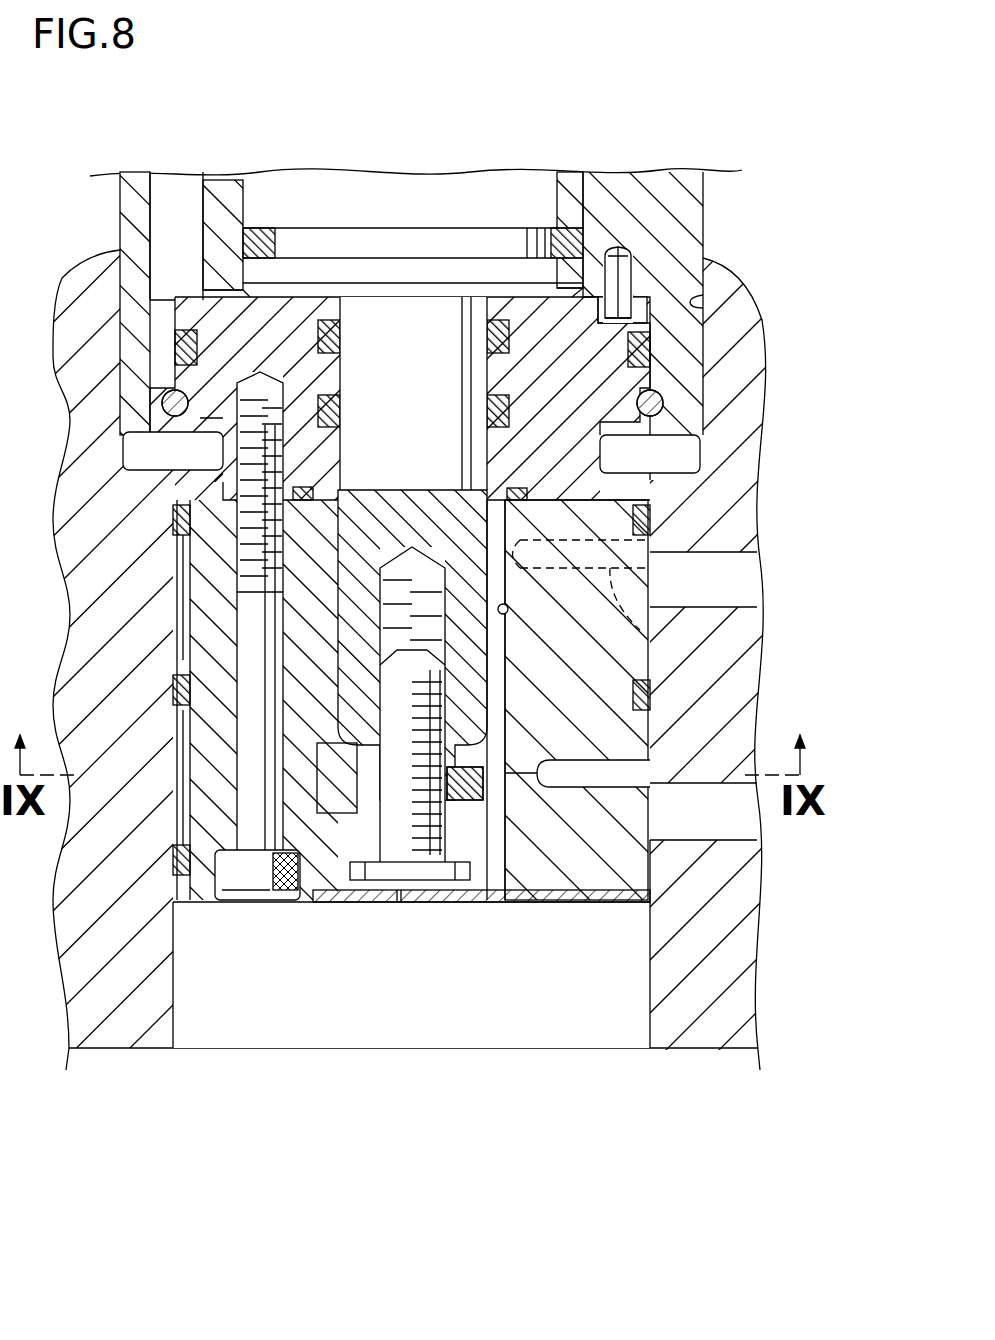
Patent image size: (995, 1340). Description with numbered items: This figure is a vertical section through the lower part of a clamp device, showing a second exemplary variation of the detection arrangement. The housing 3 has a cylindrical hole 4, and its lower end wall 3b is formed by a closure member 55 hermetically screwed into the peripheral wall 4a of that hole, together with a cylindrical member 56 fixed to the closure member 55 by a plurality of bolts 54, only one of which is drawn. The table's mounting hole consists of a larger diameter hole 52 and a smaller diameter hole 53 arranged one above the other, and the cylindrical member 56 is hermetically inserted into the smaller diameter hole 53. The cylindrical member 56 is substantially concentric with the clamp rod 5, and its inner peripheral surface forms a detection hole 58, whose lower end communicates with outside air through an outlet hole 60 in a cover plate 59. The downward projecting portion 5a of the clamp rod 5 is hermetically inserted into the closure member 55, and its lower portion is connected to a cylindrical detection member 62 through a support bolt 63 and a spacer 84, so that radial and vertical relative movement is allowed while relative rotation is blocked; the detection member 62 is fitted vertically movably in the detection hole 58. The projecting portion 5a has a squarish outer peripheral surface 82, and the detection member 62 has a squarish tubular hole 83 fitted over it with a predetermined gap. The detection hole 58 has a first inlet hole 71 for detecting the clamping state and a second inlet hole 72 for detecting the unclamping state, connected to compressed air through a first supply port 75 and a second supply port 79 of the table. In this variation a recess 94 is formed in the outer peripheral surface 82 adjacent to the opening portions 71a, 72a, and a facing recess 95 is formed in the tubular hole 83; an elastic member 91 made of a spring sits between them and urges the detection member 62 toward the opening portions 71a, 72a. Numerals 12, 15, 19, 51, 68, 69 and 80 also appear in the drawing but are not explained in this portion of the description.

The housing 3 is at (715, 212).
The lower end wall 3b is at (822, 360).
The cylindrical hole 4 is at (576, 185).
The peripheral wall 4a is at (690, 262).
The clamp rod 5 is at (497, 670).
The projecting portion 5a is at (490, 673).
The cylinder body 12 is at (492, 392).
The chamber 15 is at (331, 190).
The bore 19 is at (340, 310).
The lower chamber 51 is at (353, 1050).
The larger diameter hole 52 is at (703, 300).
The smaller diameter hole 53 is at (650, 1012).
The bolt 54 is at (243, 900).
The closure member 55 is at (660, 398).
The cylindrical member 56 is at (700, 455).
The detection hole 58 is at (509, 610).
The cover plate 59 is at (322, 897).
The outlet hole 60 is at (385, 940).
The detection member 62 is at (570, 892).
The support bolt 63 is at (440, 882).
The spring retainer 68 is at (472, 800).
The lower sleeve portion 69 is at (522, 845).
The first inlet hole 71 is at (655, 628).
The opening portion 71a is at (525, 545).
The second inlet hole 72 is at (660, 752).
The opening portion 72a is at (540, 773).
The first supply port 75 is at (742, 582).
The second supply port 79 is at (725, 823).
The locating pin 80 is at (620, 247).
The outer peripheral surface 82 is at (310, 765).
The tubular hole 83 is at (372, 800).
The spacer 84 is at (337, 882).
The elastic member 91 is at (500, 892).
The recess 94 is at (652, 688).
The recess 95 is at (470, 762).